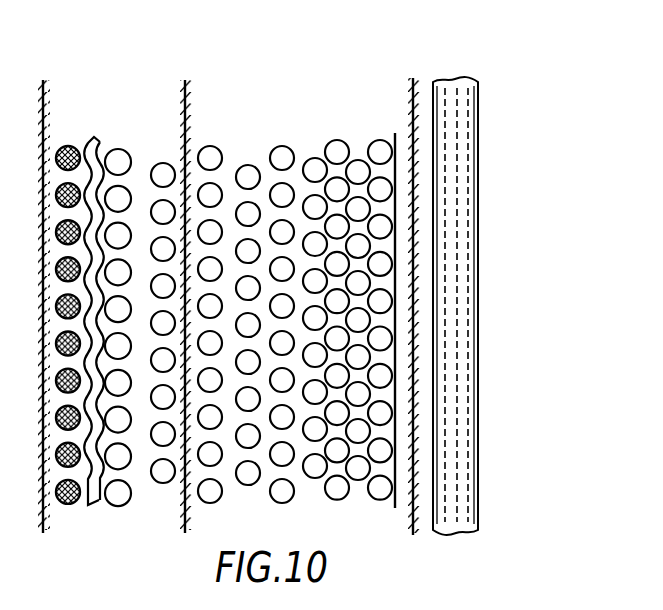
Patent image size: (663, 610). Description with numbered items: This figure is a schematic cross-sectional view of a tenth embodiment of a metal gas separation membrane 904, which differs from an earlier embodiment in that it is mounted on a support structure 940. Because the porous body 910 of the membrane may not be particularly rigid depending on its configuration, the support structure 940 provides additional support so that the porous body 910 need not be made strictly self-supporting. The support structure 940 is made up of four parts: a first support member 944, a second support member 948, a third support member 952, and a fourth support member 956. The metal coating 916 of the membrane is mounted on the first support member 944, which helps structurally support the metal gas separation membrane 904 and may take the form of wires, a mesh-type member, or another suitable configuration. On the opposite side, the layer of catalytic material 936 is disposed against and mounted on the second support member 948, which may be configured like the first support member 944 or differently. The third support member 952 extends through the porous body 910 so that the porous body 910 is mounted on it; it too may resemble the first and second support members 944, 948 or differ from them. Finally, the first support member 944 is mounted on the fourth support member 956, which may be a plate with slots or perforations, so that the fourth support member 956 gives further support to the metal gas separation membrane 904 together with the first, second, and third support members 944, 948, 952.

The metal gas separation membrane 904 is at (245, 120).
The porous body 910 is at (298, 163).
The metal coating 916 is at (395, 133).
The layer of catalytic material 936 is at (53, 509).
The support structure 940 is at (417, 537).
The first support member 944 is at (413, 80).
The second support member 948 is at (47, 88).
The third support member 952 is at (185, 533).
The fourth support member 956 is at (478, 290).